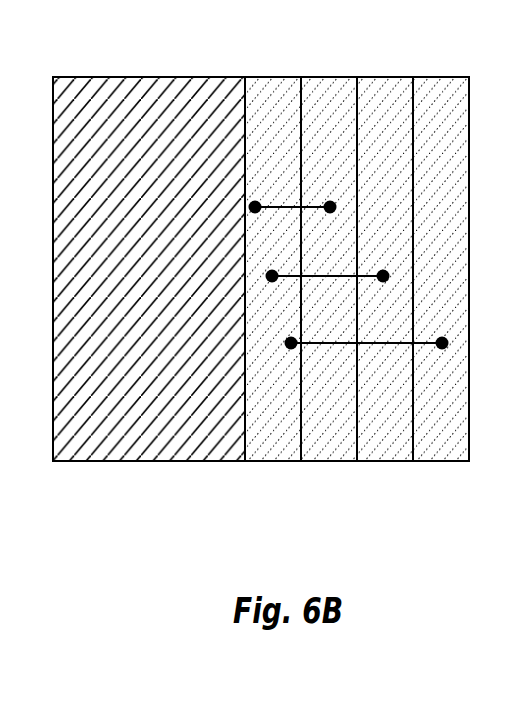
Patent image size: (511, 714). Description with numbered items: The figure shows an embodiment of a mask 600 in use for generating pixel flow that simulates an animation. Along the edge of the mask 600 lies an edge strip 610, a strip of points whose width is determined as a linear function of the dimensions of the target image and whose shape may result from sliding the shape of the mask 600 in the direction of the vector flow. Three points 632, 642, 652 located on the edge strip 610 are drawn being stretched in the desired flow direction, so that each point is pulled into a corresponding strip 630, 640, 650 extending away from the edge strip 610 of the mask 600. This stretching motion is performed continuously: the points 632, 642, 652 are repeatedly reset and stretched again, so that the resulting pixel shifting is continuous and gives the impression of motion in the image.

The mask 600 is at (158, 93).
The edge strip 610 is at (260, 93).
The strip 630 is at (324, 93).
The strip 640 is at (378, 93).
The strip 650 is at (438, 93).
The point 632 is at (288, 207).
The point 642 is at (345, 274).
The point 652 is at (398, 342).